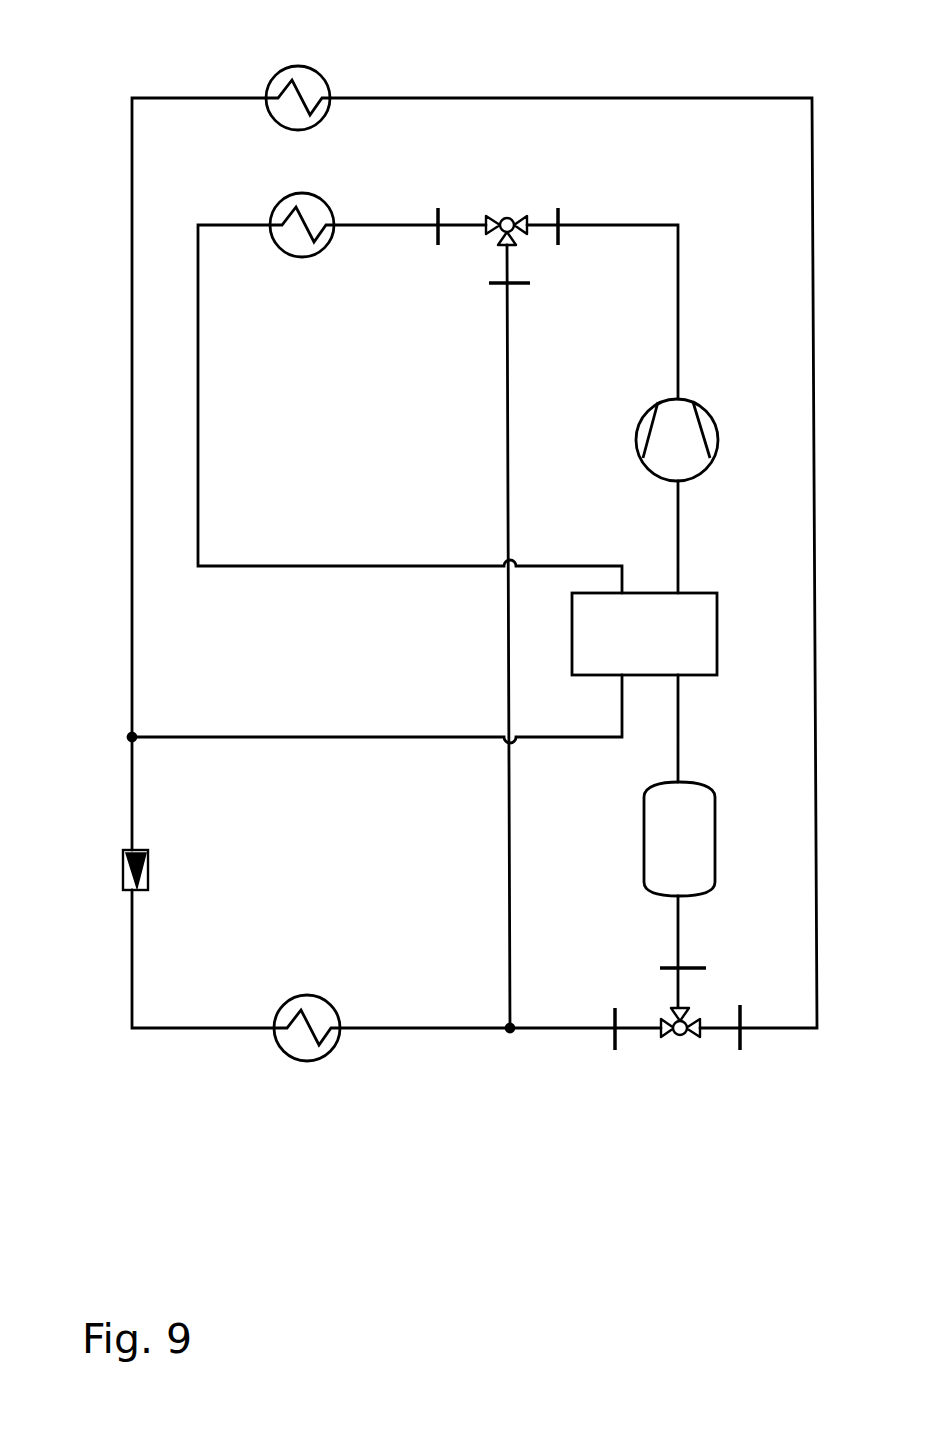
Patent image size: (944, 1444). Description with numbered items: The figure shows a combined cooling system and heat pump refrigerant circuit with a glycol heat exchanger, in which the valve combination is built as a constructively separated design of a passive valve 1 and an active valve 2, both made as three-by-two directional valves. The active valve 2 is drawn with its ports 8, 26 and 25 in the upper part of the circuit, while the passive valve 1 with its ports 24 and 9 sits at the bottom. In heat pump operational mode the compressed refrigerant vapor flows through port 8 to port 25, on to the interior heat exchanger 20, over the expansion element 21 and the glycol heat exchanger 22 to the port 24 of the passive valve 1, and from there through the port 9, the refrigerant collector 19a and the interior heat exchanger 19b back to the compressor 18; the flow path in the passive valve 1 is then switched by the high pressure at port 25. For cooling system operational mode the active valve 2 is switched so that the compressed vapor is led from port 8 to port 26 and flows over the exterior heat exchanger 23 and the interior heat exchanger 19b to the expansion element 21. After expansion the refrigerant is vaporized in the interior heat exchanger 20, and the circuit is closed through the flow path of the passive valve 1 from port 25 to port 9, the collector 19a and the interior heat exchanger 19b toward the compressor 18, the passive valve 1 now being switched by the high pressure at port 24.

The passive valve 1 is at (700, 1043).
The active valve 2 is at (527, 210).
The port 8 is at (558, 244).
The port 9 is at (664, 968).
The compressor 18 is at (677, 447).
The refrigerant collector 19a is at (644, 839).
The interior heat exchanger 19b is at (702, 627).
The interior heat exchanger 20 is at (274, 1051).
The expansion element 21 is at (122, 870).
The glycol heat exchanger 22 is at (298, 65).
The exterior heat exchanger 23 is at (302, 257).
The port 24 is at (740, 1012).
The port 25 is at (497, 285).
The port 26 is at (438, 246).